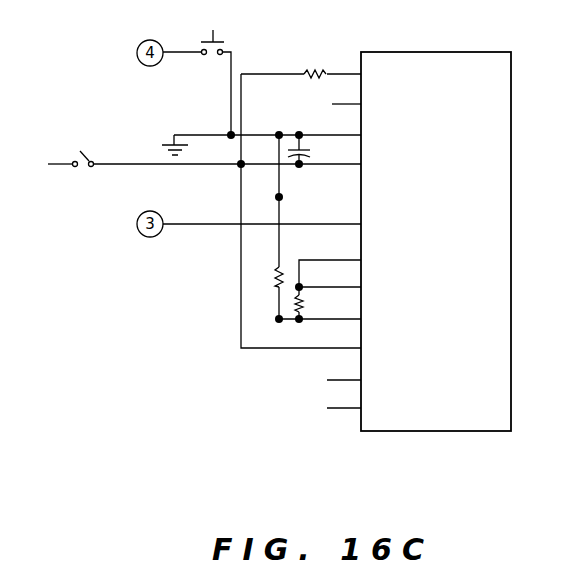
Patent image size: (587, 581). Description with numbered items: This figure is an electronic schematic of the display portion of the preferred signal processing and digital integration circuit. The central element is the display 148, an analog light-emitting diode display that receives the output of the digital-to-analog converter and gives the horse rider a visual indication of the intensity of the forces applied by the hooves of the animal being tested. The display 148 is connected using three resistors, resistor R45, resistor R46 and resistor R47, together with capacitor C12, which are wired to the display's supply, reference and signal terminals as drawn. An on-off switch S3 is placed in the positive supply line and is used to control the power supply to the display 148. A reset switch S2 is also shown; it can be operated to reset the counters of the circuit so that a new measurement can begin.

The display 148 is at (500, 243).
The reset switch S2 is at (241, 71).
The on-off switch S3 is at (59, 153).
The resistor R45 is at (332, 54).
The resistor R46 is at (303, 302).
The resistor R47 is at (277, 275).
The capacitor C12 is at (310, 153).